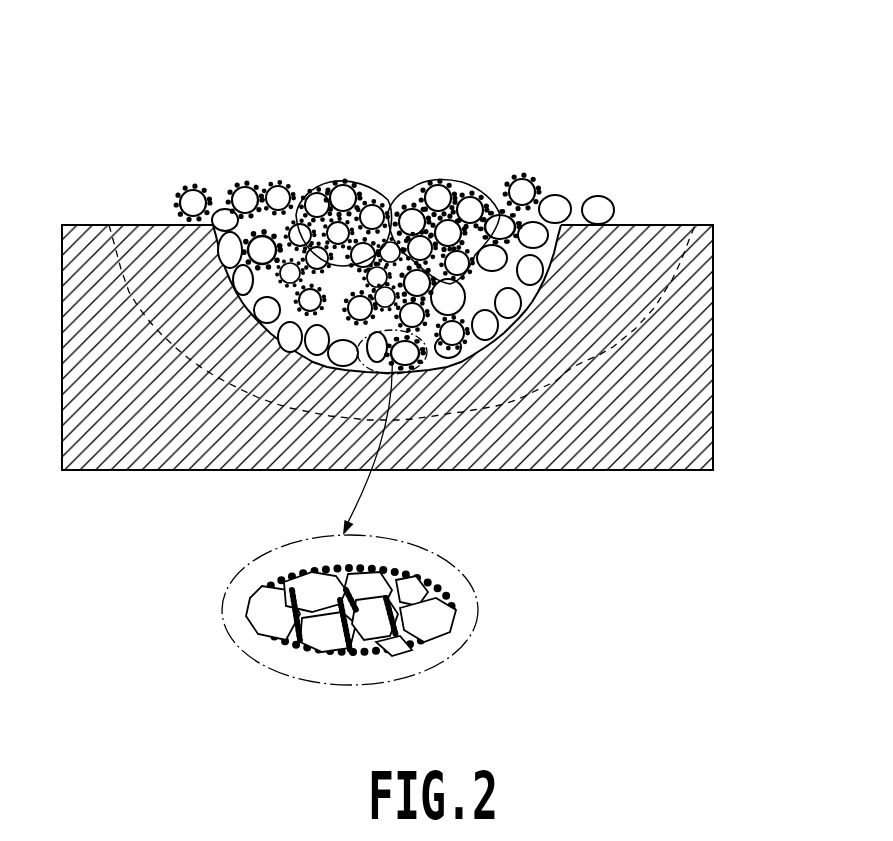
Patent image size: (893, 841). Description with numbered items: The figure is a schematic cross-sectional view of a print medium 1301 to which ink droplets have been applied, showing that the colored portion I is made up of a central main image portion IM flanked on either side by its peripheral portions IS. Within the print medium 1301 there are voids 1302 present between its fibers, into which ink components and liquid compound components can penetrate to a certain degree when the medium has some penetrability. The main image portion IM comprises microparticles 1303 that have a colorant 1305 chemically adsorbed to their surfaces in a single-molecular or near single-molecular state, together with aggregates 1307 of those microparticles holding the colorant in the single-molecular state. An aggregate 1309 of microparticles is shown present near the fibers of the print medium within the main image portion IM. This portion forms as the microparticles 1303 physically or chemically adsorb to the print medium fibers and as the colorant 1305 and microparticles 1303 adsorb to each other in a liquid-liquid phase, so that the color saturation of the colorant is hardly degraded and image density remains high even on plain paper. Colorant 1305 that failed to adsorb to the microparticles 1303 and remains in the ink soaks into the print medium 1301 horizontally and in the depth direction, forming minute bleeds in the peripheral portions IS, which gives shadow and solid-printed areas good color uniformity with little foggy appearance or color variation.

The print medium 1301 is at (72, 225).
The voids 1302 is at (482, 288).
The microparticles 1303 is at (522, 193).
The colorant 1305 is at (617, 203).
The aggregates of the microparticles 1307 is at (367, 193).
The aggregate of microparticles 1309 is at (428, 357).
The colored portion I is at (107, 56).
The peripheral portions IS is at (683, 225).
The main image portion IM is at (173, 114).